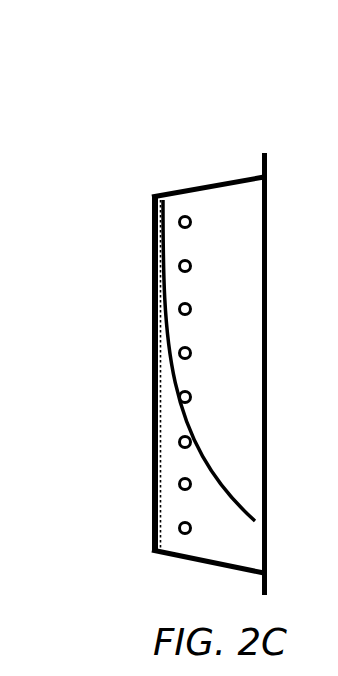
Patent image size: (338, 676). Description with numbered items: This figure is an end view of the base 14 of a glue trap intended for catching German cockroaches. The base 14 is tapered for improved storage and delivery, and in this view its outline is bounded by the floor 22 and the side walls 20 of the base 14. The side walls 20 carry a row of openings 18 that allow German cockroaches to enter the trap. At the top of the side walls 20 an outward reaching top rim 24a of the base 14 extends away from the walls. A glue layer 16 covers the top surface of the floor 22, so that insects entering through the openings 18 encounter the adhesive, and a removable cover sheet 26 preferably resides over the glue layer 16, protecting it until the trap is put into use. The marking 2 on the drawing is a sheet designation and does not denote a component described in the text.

The cover panel 14 is at (162, 137).
The side edge 24a is at (263, 170).
The panel face 20 is at (248, 402).
The stitch line 16 is at (158, 517).
The apertures 18 is at (177, 490).
The edge strip 22 is at (152, 417).
The cord 26 is at (247, 503).
The seat 2 is at (330, 260).